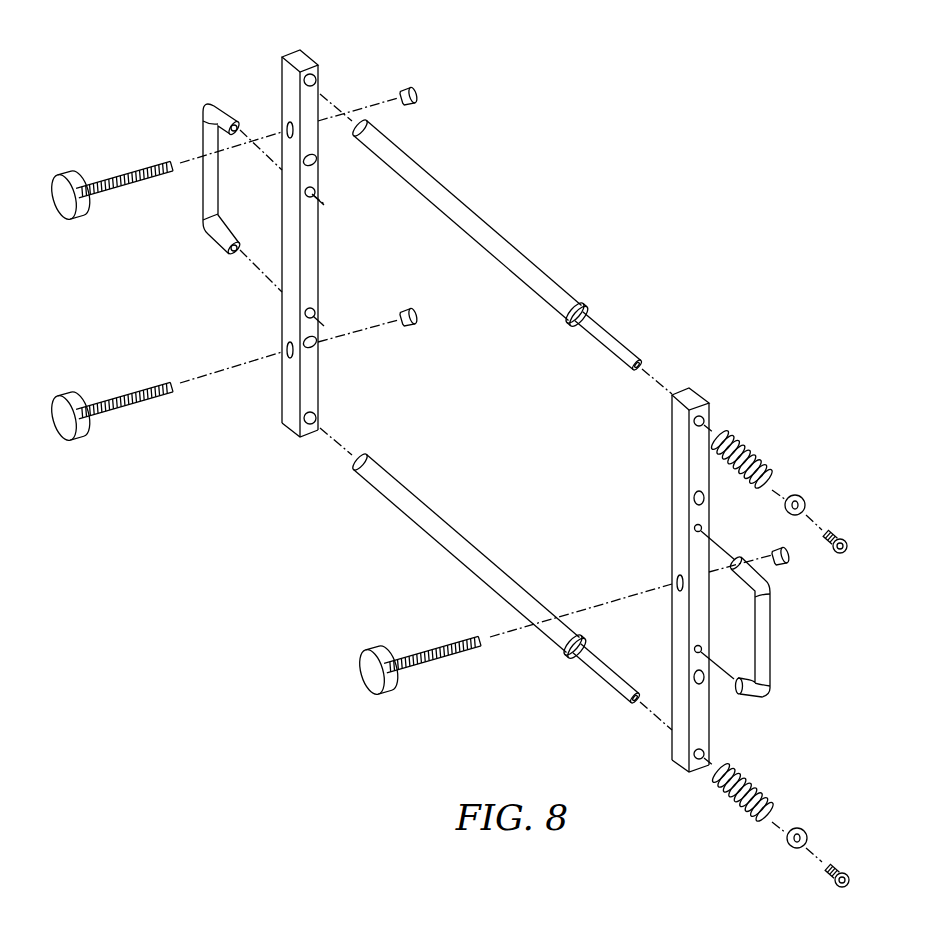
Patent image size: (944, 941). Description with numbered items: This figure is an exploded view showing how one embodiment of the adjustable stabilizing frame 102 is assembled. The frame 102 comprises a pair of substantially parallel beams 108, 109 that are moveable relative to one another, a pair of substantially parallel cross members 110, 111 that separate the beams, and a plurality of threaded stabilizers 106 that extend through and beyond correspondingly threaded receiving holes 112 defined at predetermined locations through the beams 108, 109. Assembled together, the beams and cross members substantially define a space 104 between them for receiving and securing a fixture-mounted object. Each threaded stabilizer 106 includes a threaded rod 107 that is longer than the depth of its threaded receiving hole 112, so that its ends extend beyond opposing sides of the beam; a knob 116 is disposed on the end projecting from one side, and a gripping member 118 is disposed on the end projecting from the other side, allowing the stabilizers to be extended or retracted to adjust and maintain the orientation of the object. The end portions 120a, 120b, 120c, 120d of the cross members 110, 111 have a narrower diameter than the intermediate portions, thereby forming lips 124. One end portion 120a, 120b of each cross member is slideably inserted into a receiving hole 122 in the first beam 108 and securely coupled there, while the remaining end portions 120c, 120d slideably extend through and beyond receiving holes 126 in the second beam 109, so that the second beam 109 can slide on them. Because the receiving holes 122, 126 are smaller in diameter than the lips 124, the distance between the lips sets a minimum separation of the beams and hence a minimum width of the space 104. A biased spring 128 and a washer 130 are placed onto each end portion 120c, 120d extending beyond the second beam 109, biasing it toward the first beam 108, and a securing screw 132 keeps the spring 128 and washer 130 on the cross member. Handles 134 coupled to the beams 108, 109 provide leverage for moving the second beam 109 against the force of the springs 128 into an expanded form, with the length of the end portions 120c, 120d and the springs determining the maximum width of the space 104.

The adjustable stabilizing frame 102 is at (558, 131).
The space 104 is at (502, 384).
The threaded stabilizer 106 is at (409, 418).
The threaded rod 107 is at (128, 173).
The first beam 108 is at (297, 55).
The second beam 109 is at (696, 397).
The cross member 110 is at (468, 210).
The cross member 111 is at (470, 542).
The threaded receiving hole 112 is at (285, 128).
The knob 116 is at (73, 218).
The gripping member 118 is at (413, 88).
The end portion 120a is at (364, 138).
The end portion 120b is at (357, 470).
The end portion 120c is at (607, 338).
The end portion 120d is at (607, 668).
The receiving hole 122 is at (313, 82).
The lip 124 is at (371, 131).
The receiving hole 126 is at (698, 424).
The biased spring 128 is at (746, 442).
The washer 130 is at (798, 498).
The securing screw 132 is at (840, 553).
The handle 134 is at (213, 102).